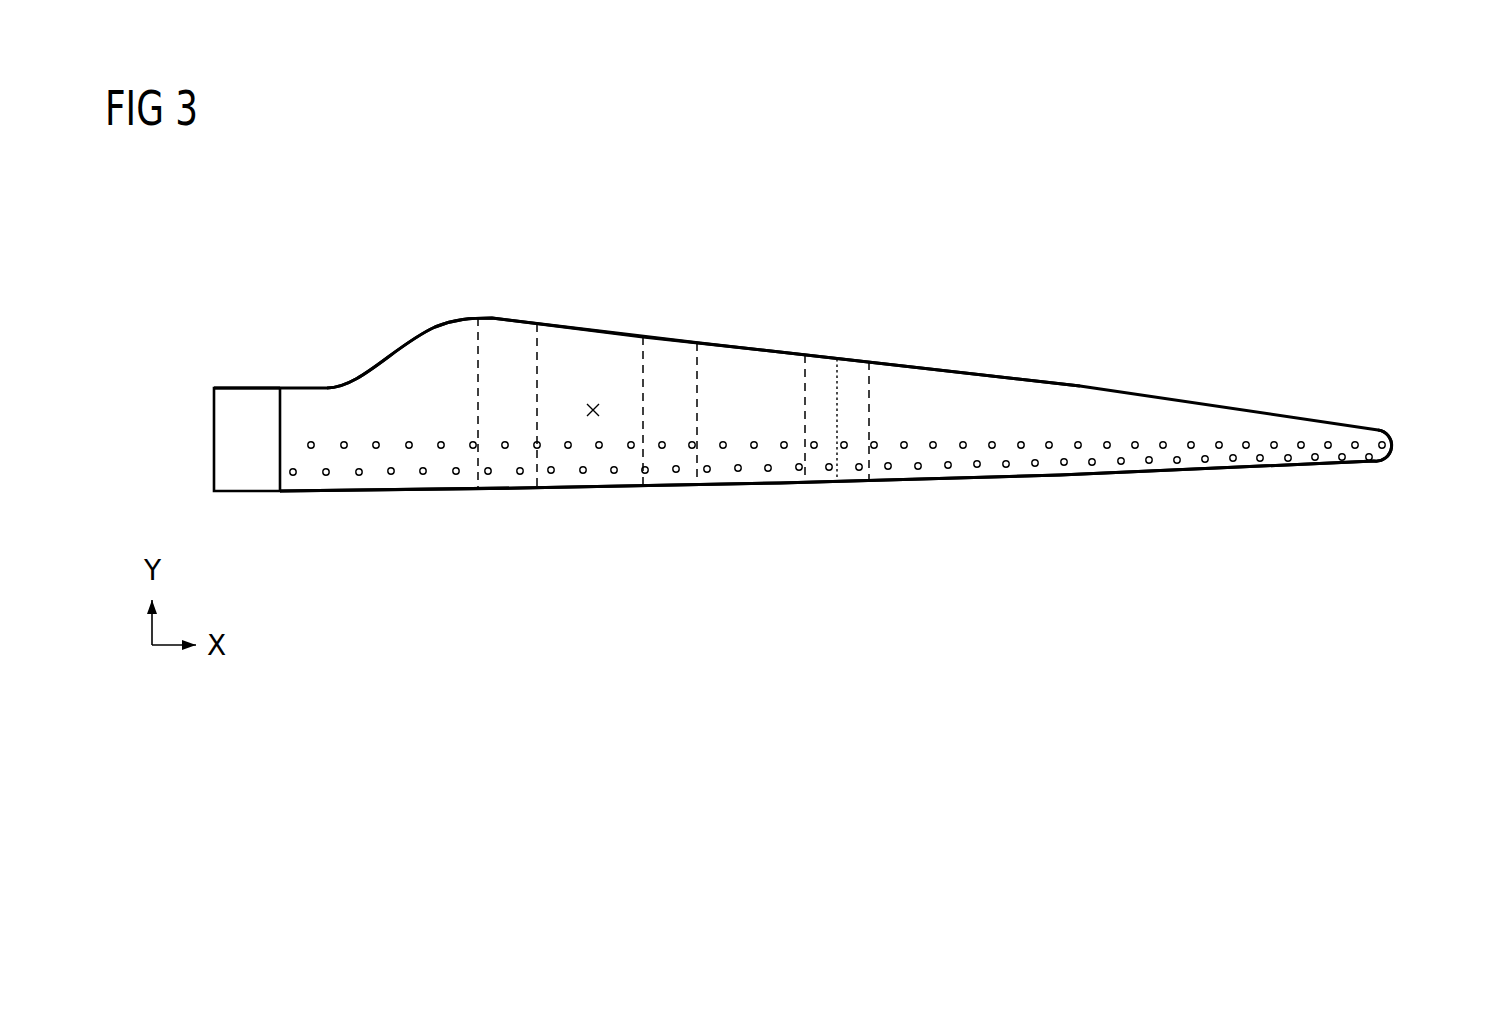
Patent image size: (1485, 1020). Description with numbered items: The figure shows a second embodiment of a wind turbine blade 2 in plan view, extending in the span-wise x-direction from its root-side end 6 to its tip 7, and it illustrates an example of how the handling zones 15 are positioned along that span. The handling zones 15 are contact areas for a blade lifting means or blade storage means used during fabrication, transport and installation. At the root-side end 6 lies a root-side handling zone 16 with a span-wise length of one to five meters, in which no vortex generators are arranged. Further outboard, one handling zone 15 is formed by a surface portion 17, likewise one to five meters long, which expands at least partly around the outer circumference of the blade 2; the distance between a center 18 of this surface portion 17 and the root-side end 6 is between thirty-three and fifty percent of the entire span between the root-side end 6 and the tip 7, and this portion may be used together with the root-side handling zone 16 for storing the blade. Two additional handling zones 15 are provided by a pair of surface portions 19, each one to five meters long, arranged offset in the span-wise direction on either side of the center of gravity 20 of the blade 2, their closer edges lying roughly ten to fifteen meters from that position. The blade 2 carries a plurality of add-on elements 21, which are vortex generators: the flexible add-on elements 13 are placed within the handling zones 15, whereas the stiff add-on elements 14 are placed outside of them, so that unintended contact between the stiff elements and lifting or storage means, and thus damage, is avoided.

The wind turbine blade 2 is at (1066, 180).
The root-side end 6 is at (213, 437).
The tip 7 is at (1396, 440).
The flexible add-on elements 13 is at (497, 486).
The stiff add-on elements 14 is at (410, 488).
The handling zones 15 is at (853, 358).
The root-side handling zone 16 is at (244, 388).
The surface portion 17 is at (820, 486).
The center of the surface portion 18 is at (836, 375).
The pair of surface portions 19 is at (520, 322).
The center of gravity 20 is at (593, 405).
The add-on elements 21 is at (913, 416).